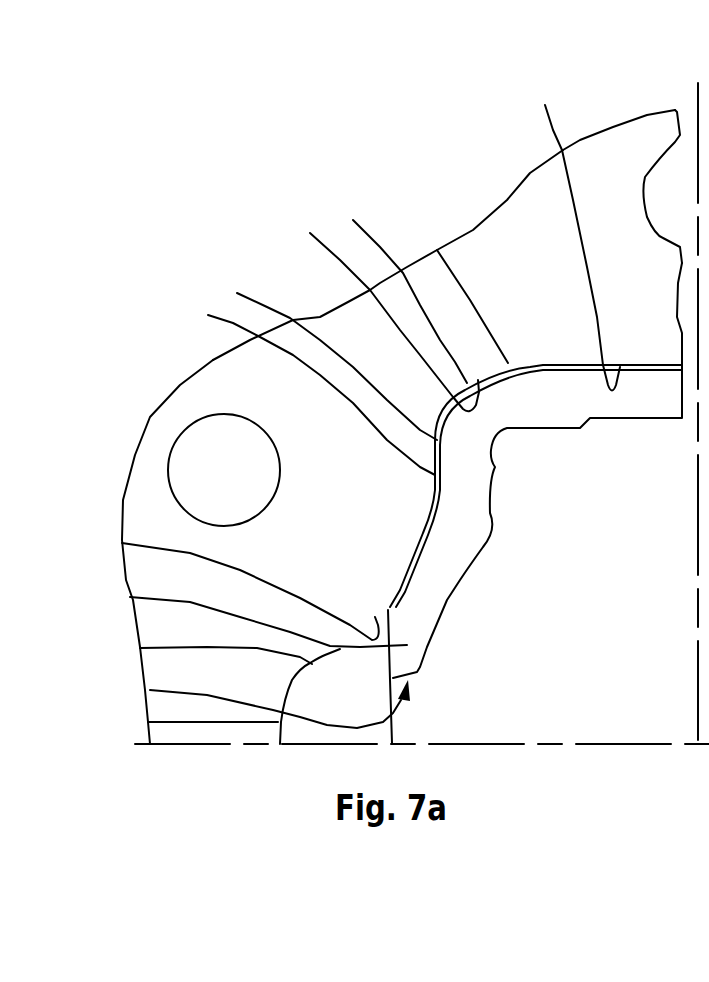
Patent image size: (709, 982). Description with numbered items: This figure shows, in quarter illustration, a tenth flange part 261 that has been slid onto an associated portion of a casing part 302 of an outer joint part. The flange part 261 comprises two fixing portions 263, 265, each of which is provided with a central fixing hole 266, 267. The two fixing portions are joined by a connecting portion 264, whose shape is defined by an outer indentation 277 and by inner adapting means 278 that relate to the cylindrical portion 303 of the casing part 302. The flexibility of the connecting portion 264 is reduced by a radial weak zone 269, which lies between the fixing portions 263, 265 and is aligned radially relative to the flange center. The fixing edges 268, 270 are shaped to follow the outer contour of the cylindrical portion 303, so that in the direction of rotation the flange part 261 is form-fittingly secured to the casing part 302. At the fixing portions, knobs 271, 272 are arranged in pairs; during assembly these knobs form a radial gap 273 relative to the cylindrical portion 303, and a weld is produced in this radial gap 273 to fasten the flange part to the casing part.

The tenth flange part 261 is at (268, 282).
The fixing portion 263 is at (223, 383).
The connecting portion 264 is at (358, 315).
The fixing portion 265 is at (610, 150).
The central fixing hole 266 is at (197, 445).
The central fixing hole 267 is at (665, 167).
The fixing edge 268 is at (122, 543).
The radial weak zone 269 is at (397, 284).
The fixing edge 270 is at (575, 231).
The knob 271 is at (140, 648).
The knob 272 is at (317, 352).
The radial gap 273 is at (300, 382).
The outer indentation 277 is at (420, 277).
The inner adapting means 278 is at (380, 307).
The casing part 302 is at (150, 690).
The cylindrical portion 303 is at (130, 597).